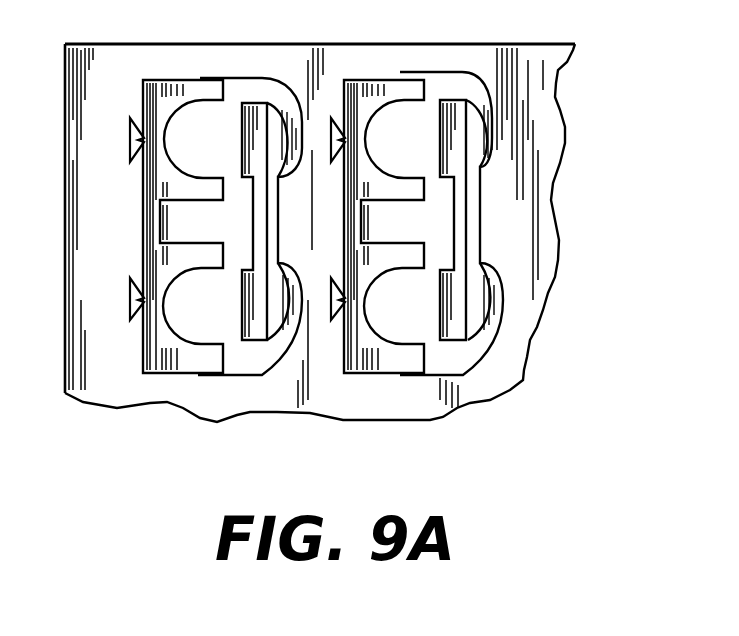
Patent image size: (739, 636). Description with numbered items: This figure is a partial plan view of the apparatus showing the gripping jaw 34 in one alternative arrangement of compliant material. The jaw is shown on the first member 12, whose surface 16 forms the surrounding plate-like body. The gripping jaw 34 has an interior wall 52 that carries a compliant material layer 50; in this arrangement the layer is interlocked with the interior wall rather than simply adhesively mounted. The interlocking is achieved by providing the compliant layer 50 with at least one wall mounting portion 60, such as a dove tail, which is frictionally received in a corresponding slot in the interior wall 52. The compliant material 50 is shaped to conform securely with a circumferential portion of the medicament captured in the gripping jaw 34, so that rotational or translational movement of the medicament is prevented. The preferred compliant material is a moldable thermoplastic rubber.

The first member 12 is at (455, 45).
The surface 16 is at (547, 95).
The gripping jaw 34 is at (207, 307).
The compliant material layer 50 is at (190, 88).
The interior wall 52 is at (238, 80).
The wall mounting portion 60 is at (130, 140).